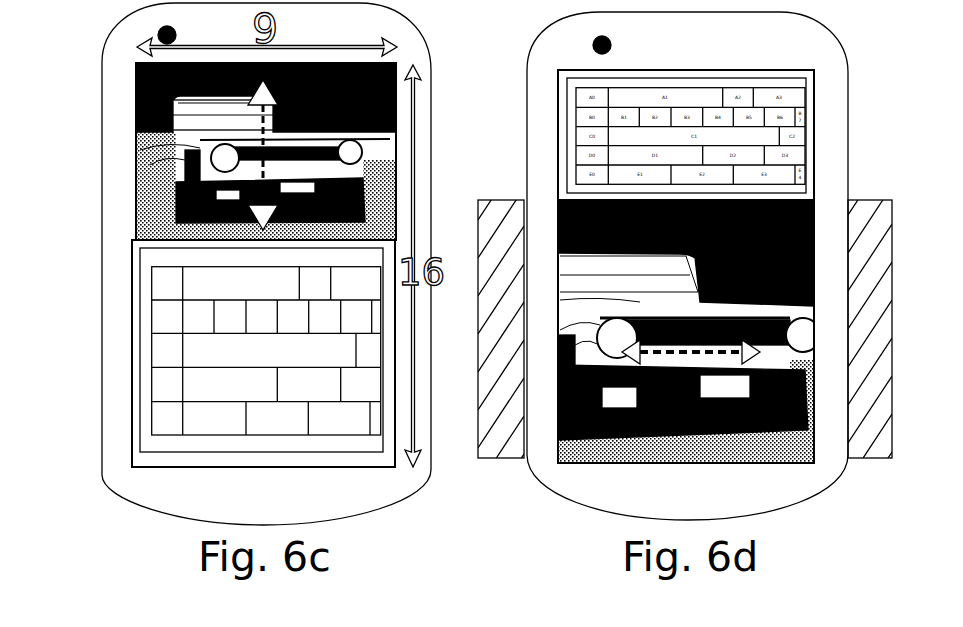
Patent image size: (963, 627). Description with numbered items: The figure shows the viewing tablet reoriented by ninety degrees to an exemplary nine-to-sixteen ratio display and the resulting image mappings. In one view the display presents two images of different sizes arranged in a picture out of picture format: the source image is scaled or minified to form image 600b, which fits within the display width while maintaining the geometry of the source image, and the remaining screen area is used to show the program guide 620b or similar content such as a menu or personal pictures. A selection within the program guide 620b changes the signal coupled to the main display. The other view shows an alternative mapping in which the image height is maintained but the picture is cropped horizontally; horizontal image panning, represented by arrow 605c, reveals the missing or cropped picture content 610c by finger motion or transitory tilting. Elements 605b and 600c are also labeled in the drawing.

In FIG. 6c, the minified image 600b is at (140, 183).
In FIG. 6c, the first display portion showing image 605b is at (398, 100).
In FIG. 6c, the program guide 620b is at (177, 325).
In FIG. 6d, the electronic device 600c is at (578, 462).
In FIG. 6d, the horizontal image panning arrow 605c is at (673, 317).
In FIG. 6d, the cropped picture content 610c is at (483, 437).